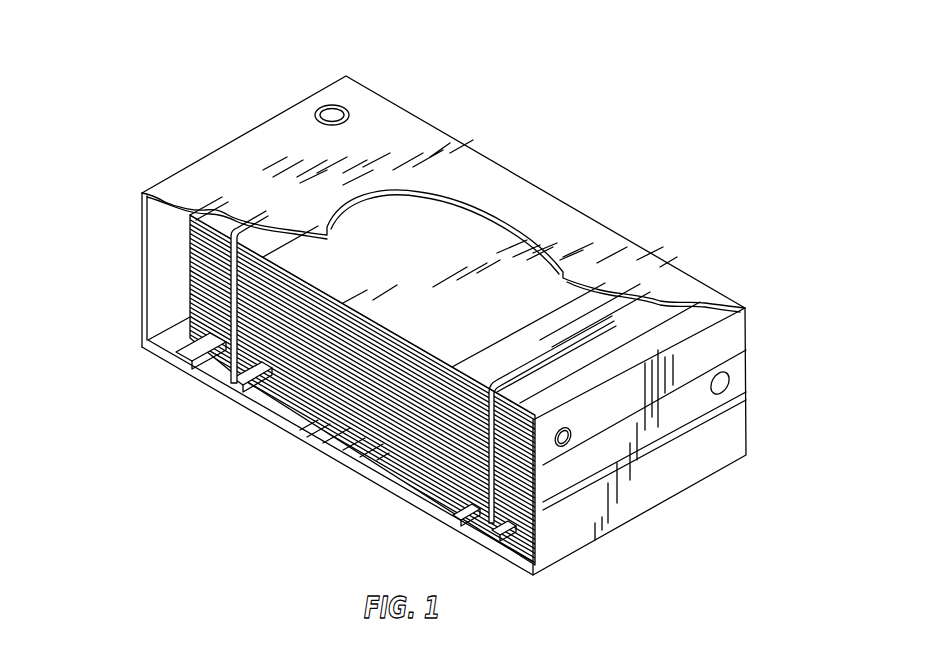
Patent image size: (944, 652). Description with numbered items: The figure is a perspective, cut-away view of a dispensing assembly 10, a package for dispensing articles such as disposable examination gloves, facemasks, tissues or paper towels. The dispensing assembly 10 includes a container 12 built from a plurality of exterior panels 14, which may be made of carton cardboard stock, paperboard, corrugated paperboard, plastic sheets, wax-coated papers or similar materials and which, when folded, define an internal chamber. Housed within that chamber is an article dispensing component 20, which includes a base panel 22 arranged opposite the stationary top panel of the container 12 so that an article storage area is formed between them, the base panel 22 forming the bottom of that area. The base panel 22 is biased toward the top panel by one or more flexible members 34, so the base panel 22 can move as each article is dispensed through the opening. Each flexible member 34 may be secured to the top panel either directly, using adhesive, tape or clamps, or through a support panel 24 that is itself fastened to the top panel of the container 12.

The dispensing assembly 10 is at (745, 122).
The container 12 is at (423, 110).
The exterior panels 14 is at (527, 213).
The article dispensing component 20 is at (204, 289).
The base panel 22 is at (246, 381).
The support panel 24 is at (227, 226).
The flexible member 34 is at (497, 500).